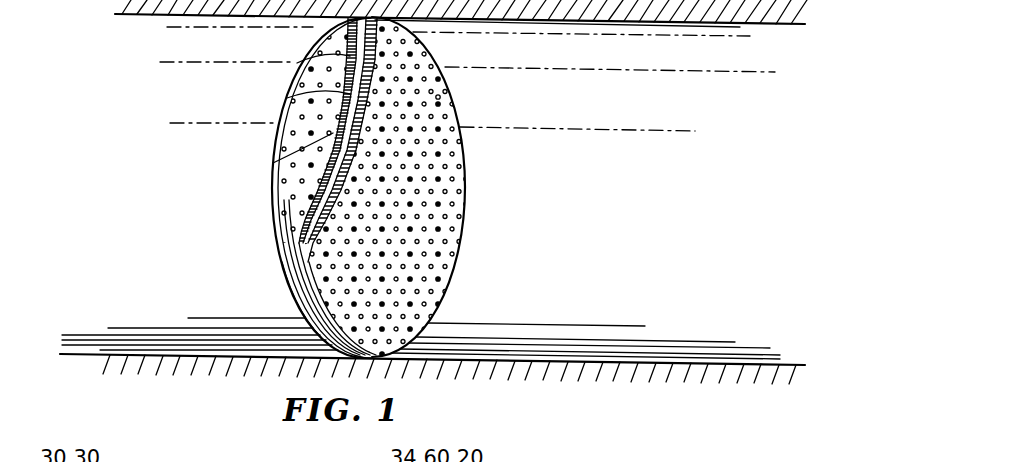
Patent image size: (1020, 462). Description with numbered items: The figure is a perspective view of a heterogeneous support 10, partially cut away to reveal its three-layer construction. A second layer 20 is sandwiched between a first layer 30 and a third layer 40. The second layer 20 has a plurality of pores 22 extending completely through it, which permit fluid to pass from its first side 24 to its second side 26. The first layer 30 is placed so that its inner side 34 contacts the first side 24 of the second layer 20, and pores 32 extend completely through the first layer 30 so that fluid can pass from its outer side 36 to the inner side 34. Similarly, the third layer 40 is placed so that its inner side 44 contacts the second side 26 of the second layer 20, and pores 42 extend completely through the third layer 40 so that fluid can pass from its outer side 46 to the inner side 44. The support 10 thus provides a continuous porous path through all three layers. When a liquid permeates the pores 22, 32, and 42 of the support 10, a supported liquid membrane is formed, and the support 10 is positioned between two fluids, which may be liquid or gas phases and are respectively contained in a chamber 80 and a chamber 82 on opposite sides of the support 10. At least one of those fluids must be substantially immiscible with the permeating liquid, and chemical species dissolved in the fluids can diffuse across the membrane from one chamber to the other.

The heterogeneous support 10 is at (479, 202).
The second layer 20 is at (303, 251).
The pores 22 is at (273, 163).
The first side 24 is at (350, 52).
The second side 26 is at (287, 98).
The first layer 30 is at (292, 295).
The pores 32 is at (297, 63).
The inner side 34 is at (300, 203).
The outer side 36 is at (273, 182).
The third layer 40 is at (306, 266).
The pores 42 is at (441, 97).
The inner side 44 is at (312, 174).
The outer side 46 is at (463, 244).
The chamber 80 is at (676, 320).
The chamber 82 is at (178, 305).